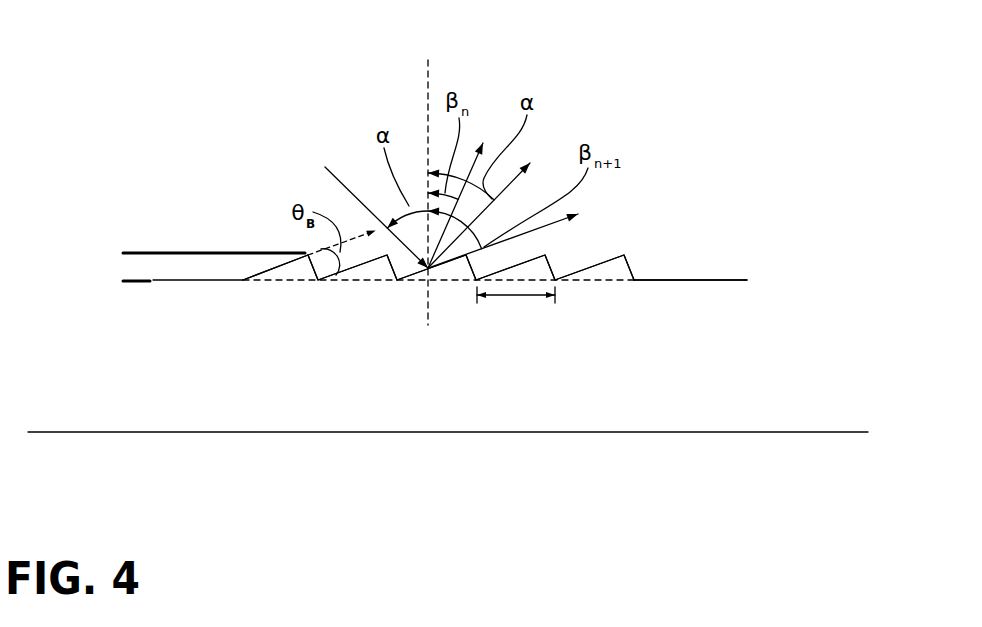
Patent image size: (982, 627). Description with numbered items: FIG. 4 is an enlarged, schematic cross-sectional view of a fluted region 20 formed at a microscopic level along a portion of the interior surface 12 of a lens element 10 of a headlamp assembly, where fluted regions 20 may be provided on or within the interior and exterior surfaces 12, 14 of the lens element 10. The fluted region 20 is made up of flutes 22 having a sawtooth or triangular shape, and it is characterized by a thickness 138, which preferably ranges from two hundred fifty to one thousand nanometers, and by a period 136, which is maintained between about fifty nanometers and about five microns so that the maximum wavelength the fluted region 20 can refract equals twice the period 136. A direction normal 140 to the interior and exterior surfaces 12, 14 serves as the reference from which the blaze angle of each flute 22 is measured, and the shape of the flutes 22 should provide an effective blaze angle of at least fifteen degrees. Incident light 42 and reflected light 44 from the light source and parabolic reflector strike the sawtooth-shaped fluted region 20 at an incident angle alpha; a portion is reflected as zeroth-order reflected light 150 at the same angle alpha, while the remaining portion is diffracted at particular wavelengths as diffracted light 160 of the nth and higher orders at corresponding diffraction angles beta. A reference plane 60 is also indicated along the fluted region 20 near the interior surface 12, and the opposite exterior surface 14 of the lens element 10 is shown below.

The lens element 10 is at (689, 366).
The interior surface 12 is at (723, 279).
The exterior surface 14 is at (728, 433).
The fluted region 20 is at (647, 128).
The flutes 22 is at (306, 252).
The incident light 42 is at (352, 204).
The reflected light 44 is at (352, 204).
The grating surface plane 60 is at (711, 226).
The period 136 is at (519, 312).
The thickness 138 is at (137, 332).
The direction normal 140 is at (427, 87).
The reflected light 150 is at (501, 205).
The diffracted light 160 is at (543, 194).